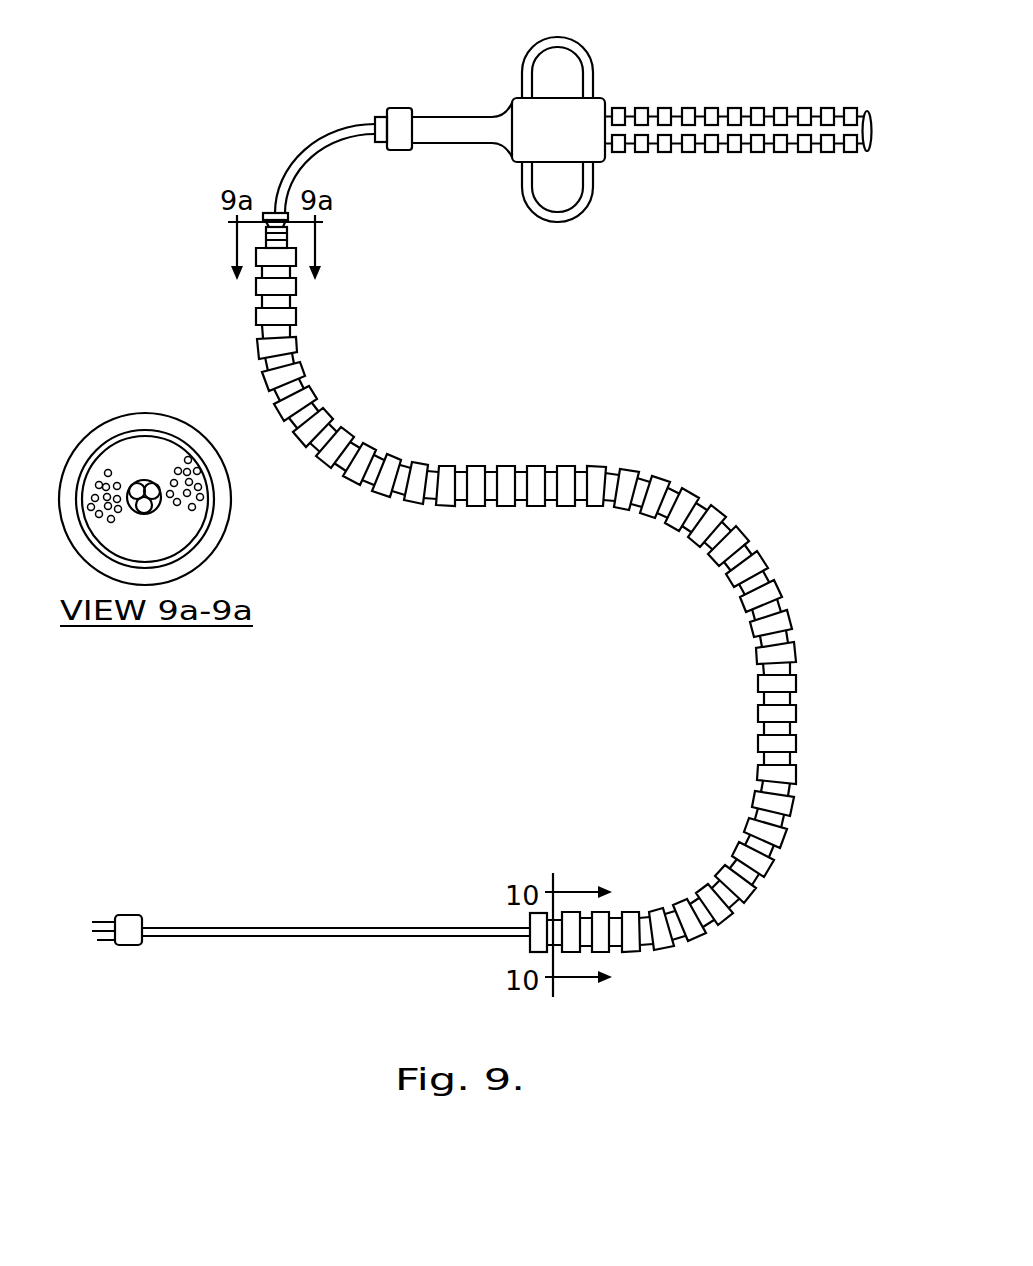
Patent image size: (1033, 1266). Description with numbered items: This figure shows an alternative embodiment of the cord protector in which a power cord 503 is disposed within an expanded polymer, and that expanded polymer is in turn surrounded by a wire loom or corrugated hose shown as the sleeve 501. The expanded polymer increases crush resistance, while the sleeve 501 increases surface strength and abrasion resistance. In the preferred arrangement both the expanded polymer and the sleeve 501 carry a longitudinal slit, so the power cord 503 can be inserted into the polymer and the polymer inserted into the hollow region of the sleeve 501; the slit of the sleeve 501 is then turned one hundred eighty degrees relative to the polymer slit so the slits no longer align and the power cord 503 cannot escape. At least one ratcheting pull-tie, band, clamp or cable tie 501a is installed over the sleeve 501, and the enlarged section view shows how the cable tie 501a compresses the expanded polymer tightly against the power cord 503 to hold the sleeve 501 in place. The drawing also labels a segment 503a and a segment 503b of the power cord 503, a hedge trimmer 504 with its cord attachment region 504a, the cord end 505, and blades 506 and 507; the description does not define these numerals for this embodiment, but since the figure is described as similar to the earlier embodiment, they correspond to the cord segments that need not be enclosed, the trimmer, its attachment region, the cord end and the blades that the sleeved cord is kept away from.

In FIG. 9, the sleeve 501 is at (735, 598).
In FIG. 9a, the cable tie 501a is at (252, 232).
In FIG. 9, the power cord 503 is at (488, 928).
In FIG. 9, the cable 503a is at (268, 162).
In FIG. 9, the cable 503b is at (336, 886).
In FIG. 9, the handle 504 is at (512, 172).
In FIG. 9, the handle shaft 504a is at (390, 180).
In FIG. 9, the electrical plug 505 is at (127, 879).
In FIG. 9, the bead 506 is at (780, 108).
In FIG. 9, the bead link 507 is at (793, 108).